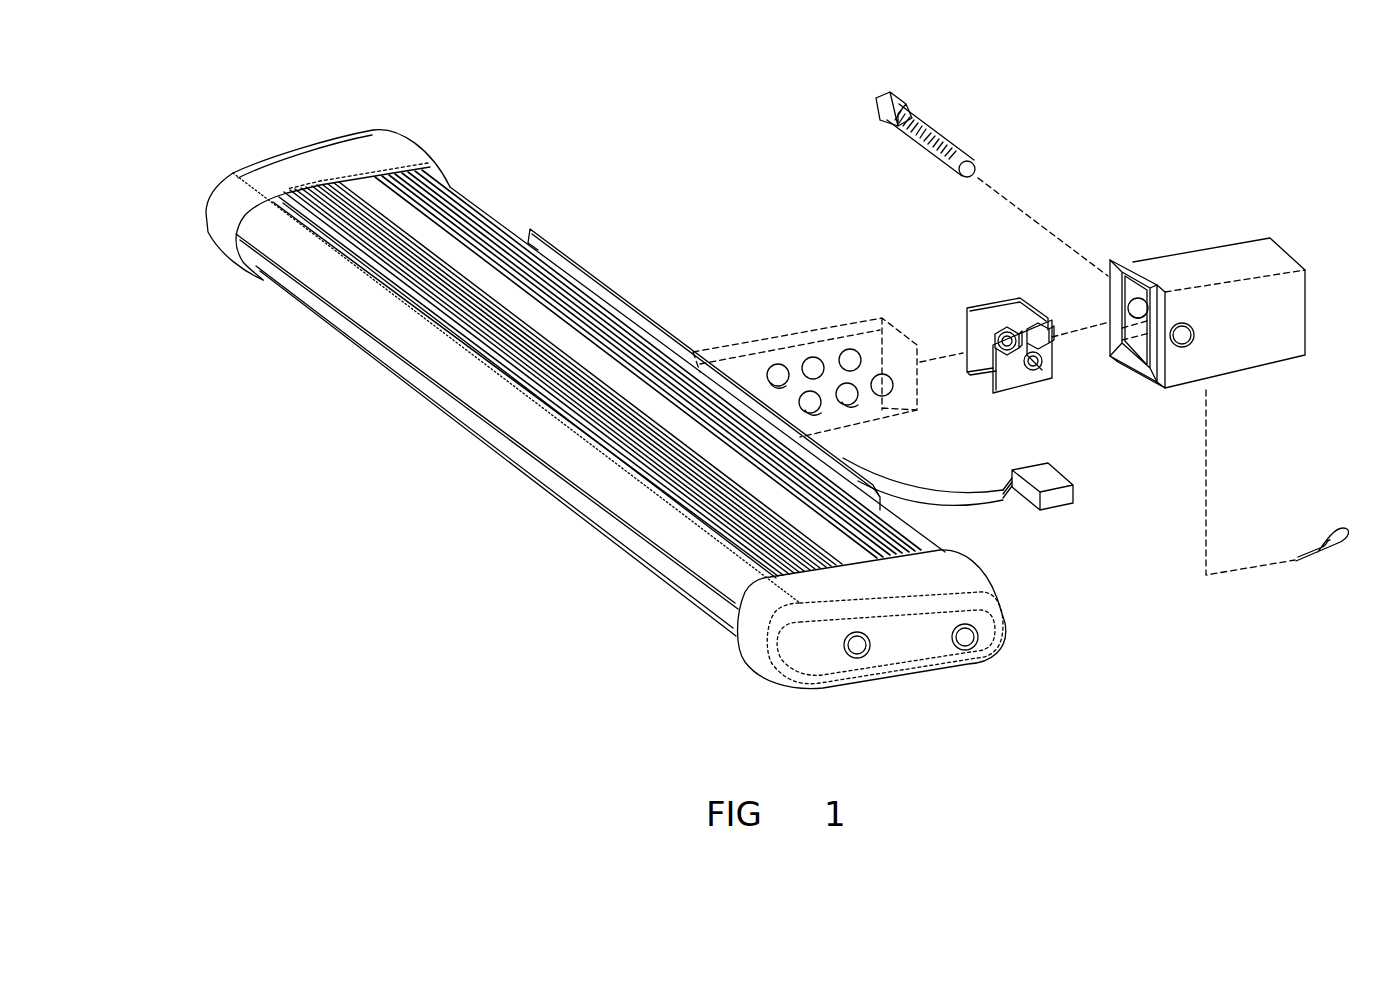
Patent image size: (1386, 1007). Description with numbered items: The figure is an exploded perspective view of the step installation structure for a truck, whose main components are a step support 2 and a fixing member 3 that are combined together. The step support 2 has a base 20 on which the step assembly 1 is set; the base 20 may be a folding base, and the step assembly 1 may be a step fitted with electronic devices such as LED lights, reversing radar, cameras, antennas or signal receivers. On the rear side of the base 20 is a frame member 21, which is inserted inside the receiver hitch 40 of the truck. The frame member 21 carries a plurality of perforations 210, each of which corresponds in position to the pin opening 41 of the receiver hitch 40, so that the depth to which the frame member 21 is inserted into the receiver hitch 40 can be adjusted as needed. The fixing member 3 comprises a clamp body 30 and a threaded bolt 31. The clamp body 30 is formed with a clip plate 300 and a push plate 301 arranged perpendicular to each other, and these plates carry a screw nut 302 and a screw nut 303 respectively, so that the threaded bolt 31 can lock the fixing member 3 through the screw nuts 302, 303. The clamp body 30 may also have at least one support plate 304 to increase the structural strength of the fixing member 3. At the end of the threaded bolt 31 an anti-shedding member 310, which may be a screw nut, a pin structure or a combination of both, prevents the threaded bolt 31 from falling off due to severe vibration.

The step assembly 1 is at (639, 409).
The step support 2 is at (693, 347).
The base 20 is at (580, 260).
The frame member 21 is at (809, 362).
The perforations 210 is at (824, 408).
The fixing member 3 is at (1014, 341).
The clamp body 30 is at (1012, 341).
The clip plate 300 is at (986, 305).
The push plate 301 is at (1032, 320).
The screw nut 302 is at (1003, 318).
The screw nut 303 is at (1060, 355).
The support plate 304 is at (1012, 380).
The threaded bolt 31 is at (943, 138).
The anti-shedding member 310 is at (1336, 527).
The receiver hitch 40 is at (1207, 379).
The pin opening 41 is at (1191, 336).